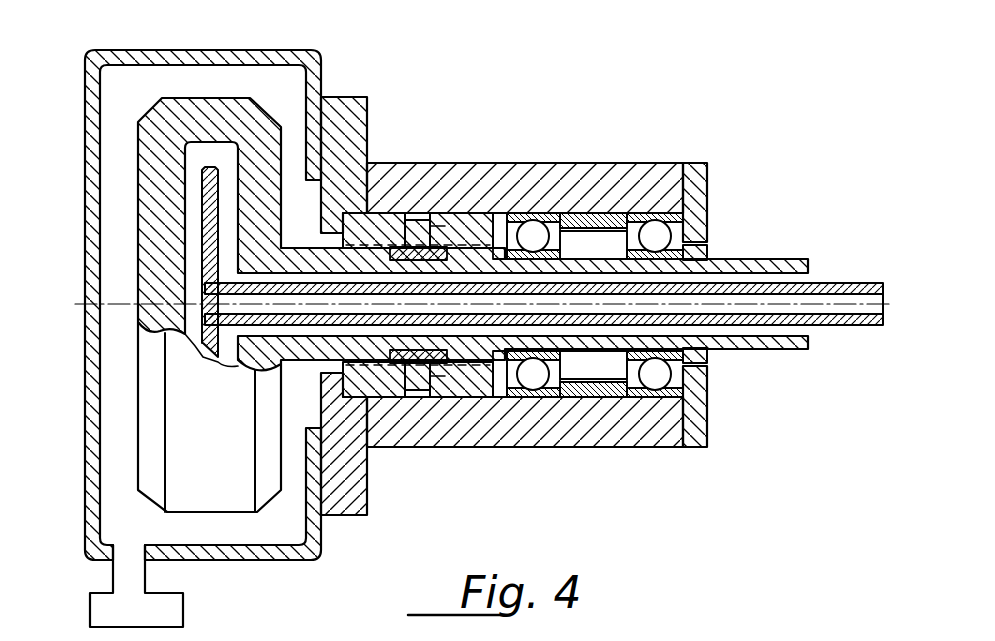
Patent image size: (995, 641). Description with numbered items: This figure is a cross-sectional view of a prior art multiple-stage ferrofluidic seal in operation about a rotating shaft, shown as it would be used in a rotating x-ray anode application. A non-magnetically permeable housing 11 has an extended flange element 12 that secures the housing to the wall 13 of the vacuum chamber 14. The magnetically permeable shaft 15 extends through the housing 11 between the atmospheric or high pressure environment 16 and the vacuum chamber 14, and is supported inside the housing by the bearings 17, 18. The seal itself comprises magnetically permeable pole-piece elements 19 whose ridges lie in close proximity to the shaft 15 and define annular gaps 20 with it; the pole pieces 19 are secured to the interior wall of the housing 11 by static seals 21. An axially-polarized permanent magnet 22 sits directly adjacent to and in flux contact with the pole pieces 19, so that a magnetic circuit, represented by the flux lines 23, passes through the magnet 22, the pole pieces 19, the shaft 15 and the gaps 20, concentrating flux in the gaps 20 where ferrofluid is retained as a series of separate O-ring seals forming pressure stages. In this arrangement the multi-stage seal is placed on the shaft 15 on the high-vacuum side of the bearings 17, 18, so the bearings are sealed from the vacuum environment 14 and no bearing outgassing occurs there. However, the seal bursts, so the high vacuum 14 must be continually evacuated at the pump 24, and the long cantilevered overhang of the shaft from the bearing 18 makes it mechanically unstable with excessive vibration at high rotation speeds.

The housing 11 is at (642, 175).
The flange element 12 is at (343, 100).
The wall 13 is at (279, 58).
The vacuum chamber 14 is at (187, 73).
The shaft 15 is at (897, 257).
The atmospheric or high pressure environment 16 is at (848, 173).
The bearing element 17 is at (655, 305).
The bearing element 18 is at (533, 305).
The pole-piece elements 19 is at (452, 223).
The annular gaps 20 is at (537, 192).
The static seals 21 is at (460, 215).
The permanent magnet 22 is at (410, 226).
The flux lines 23 is at (434, 227).
The pump 24 is at (136, 586).